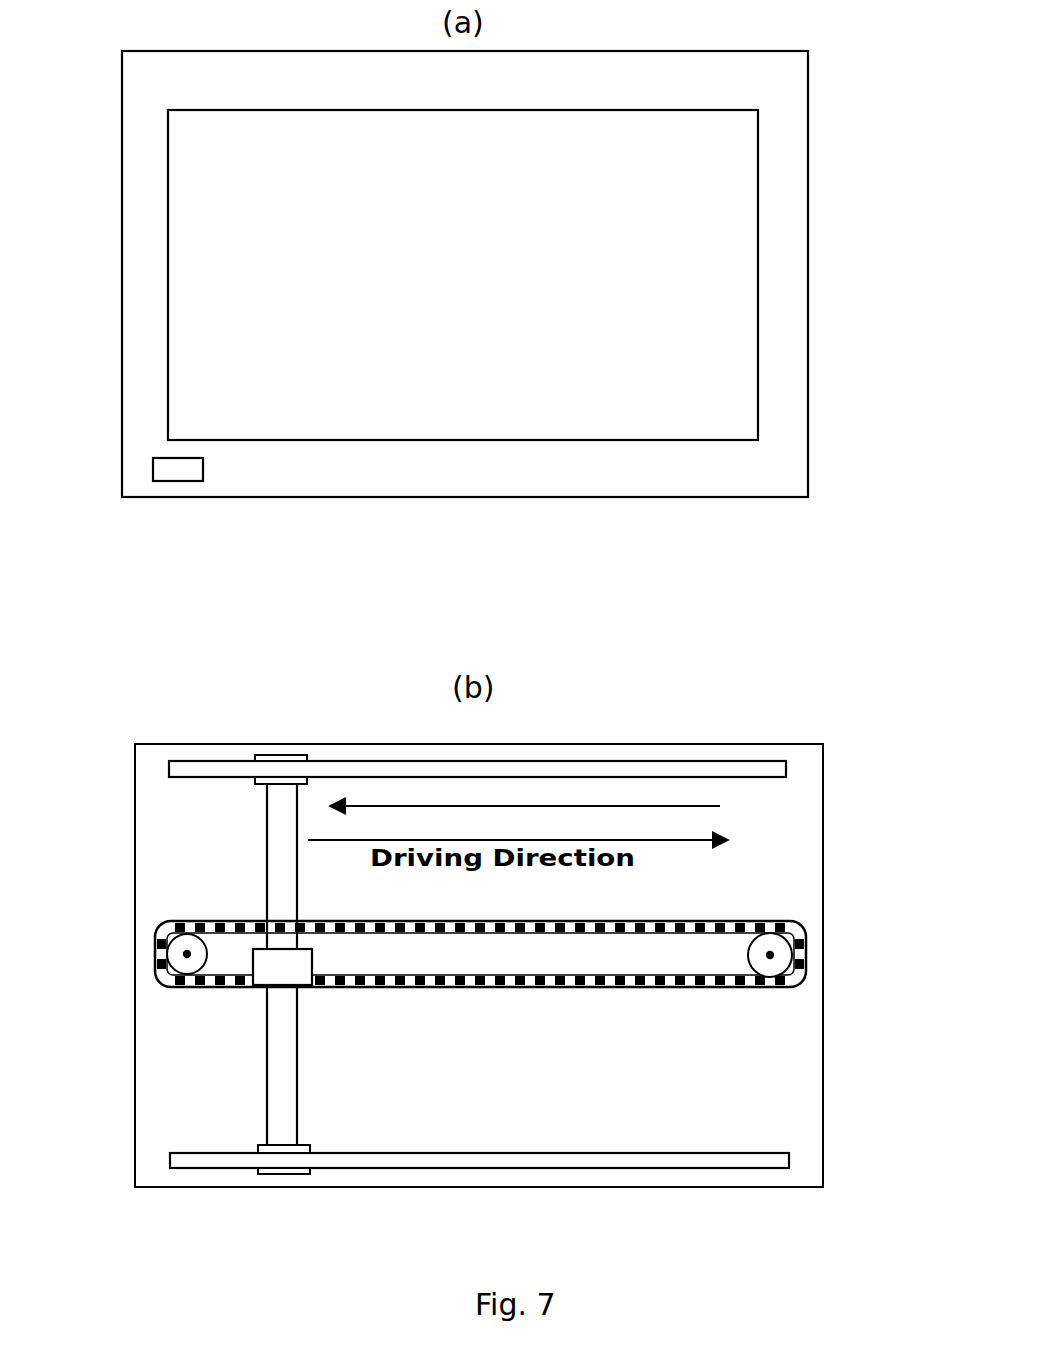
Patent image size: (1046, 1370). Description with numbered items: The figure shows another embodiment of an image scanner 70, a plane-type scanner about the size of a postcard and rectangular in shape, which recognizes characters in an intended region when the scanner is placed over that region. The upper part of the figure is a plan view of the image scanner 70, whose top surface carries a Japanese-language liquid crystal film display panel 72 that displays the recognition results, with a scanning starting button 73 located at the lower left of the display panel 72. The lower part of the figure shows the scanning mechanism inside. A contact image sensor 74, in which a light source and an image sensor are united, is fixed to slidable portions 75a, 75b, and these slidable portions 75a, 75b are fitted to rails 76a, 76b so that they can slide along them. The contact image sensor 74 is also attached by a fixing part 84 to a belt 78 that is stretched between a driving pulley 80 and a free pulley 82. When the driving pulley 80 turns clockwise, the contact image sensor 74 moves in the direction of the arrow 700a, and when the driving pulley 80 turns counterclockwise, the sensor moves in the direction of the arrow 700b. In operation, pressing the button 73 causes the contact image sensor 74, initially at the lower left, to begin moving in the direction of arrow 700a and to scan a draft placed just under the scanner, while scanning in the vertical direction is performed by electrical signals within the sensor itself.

The image scanner 70 is at (694, 52).
The liquid crystal film display panel 72 is at (742, 258).
The scanning starting button 73 is at (184, 470).
The contact image sensor 74 is at (256, 873).
The slidable portion 75a is at (300, 755).
The slidable portion 75b is at (305, 1174).
The rail 76a is at (200, 761).
The rail 76b is at (200, 1168).
The belt 78 is at (500, 921).
The driving pulley 80 is at (805, 930).
The free pulley 82 is at (170, 963).
The fixing part 84 is at (305, 982).
The arrow 700a is at (483, 838).
The arrow 700b is at (612, 806).